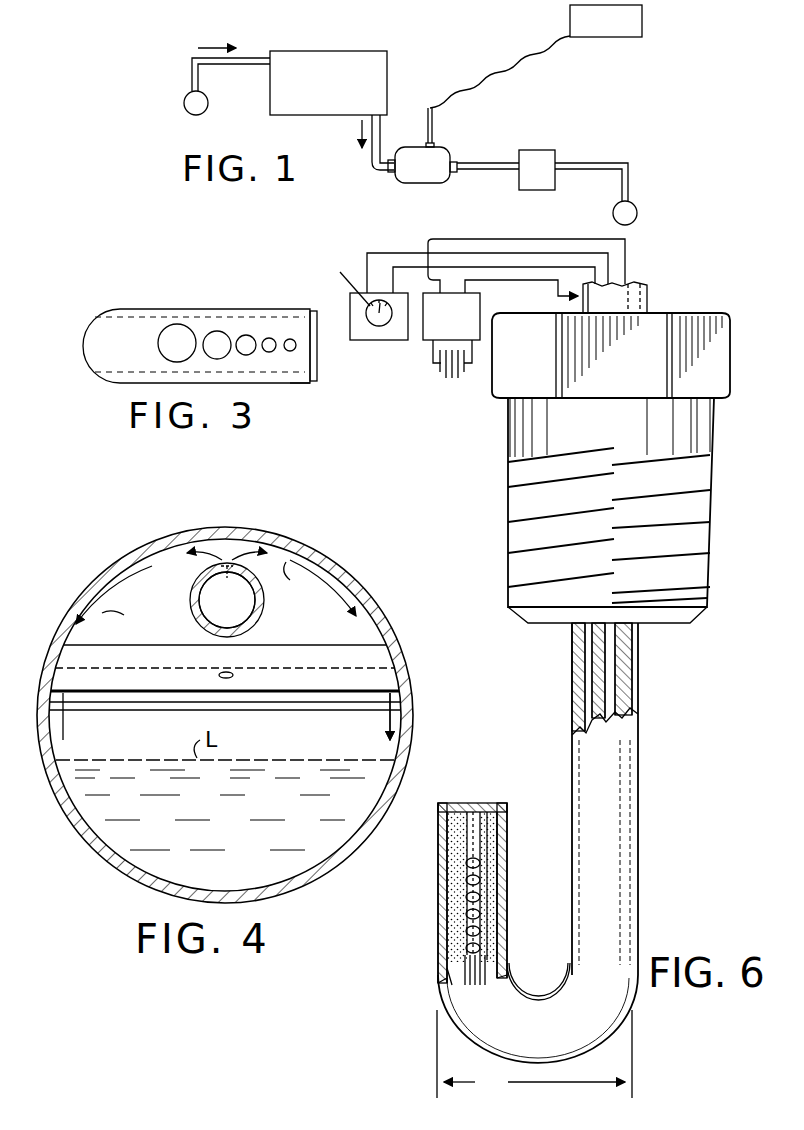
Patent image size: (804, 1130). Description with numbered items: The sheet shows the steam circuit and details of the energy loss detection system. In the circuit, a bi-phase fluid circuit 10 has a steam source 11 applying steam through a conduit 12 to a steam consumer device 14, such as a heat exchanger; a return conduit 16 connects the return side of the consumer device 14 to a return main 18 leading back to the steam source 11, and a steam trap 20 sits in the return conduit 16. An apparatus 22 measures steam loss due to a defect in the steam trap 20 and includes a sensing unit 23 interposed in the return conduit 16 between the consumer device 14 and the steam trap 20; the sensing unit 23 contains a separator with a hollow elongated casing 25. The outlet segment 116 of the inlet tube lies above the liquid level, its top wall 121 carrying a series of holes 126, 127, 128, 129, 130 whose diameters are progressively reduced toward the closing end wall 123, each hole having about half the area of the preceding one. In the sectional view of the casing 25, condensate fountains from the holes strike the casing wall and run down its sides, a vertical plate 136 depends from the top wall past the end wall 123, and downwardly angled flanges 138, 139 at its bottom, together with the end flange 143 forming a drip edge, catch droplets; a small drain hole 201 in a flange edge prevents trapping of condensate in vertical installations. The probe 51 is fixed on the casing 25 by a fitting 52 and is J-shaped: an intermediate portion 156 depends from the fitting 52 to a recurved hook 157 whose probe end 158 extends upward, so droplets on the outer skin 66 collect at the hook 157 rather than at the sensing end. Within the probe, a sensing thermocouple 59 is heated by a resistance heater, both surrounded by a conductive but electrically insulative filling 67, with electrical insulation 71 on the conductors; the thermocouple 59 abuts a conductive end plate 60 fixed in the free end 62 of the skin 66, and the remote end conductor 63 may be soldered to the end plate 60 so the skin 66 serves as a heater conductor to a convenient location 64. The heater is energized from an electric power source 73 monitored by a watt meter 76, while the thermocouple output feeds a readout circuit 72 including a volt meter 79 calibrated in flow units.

In FIG. 1, the bi-phase fluid circuit 10 is at (180, 52).
In FIG. 1, the steam source 11 is at (184, 103).
In FIG. 1, the conduit 12 is at (220, 62).
In FIG. 1, the steam consumer device 14 is at (292, 51).
In FIG. 1, the return conduit 16 is at (492, 170).
In FIG. 1, the return main 18 is at (614, 204).
In FIG. 1, the steam trap 20 is at (533, 182).
In FIG. 1, the apparatus 22 is at (491, 62).
In FIG. 1, the sensing unit 23 is at (425, 172).
In FIG. 4, the casing 25 is at (384, 620).
In FIG. 1, the probe 51 is at (428, 110).
In FIG. 6, the probe 51 is at (644, 808).
In FIG. 6, the fitting 52 is at (696, 433).
In FIG. 6, the sensing thermocouple 59 is at (448, 868).
In FIG. 6, the end plate 60 is at (468, 810).
In FIG. 6, the free end 62 is at (501, 812).
In FIG. 6, the remote end conductor 63 is at (490, 840).
In FIG. 6, the convenient location 64 is at (576, 299).
In FIG. 6, the outer skin 66 is at (628, 753).
In FIG. 6, the filling 67 is at (462, 873).
In FIG. 6, the electrical insulation 71 is at (452, 956).
In FIG. 1, the readout and/or alarm circuit 72 is at (602, 37).
In FIG. 6, the readout and/or alarm circuit 72 is at (356, 332).
In FIG. 6, the electric power source 73 is at (446, 368).
In FIG. 6, the watt meter 76 is at (451, 316).
In FIG. 6, the volt meter 79 is at (341, 280).
In FIG. 3, the outlet segment 116 is at (272, 386).
In FIG. 4, the outlet segment 116 is at (262, 606).
In FIG. 3, the top wall 121 is at (127, 330).
In FIG. 3, the end wall 123 is at (318, 378).
In FIG. 3, the hole 126 is at (172, 332).
In FIG. 3, the hole 127 is at (209, 336).
In FIG. 3, the hole 128 is at (244, 338).
In FIG. 3, the hole 129 is at (267, 340).
In FIG. 3, the hole 130 is at (290, 341).
In FIG. 4, the hole 130 is at (227, 576).
In FIG. 4, the plate 136 is at (176, 578).
In FIG. 4, the flange 138 is at (292, 704).
In FIG. 4, the flange 139 is at (150, 701).
In FIG. 4, the end flange 143 is at (131, 705).
In FIG. 6, the intermediate portion 156 is at (616, 873).
In FIG. 6, the recurved hook 157 is at (533, 1032).
In FIG. 6, the probe end 158 is at (447, 838).
In FIG. 4, the drain hole 201 is at (233, 675).